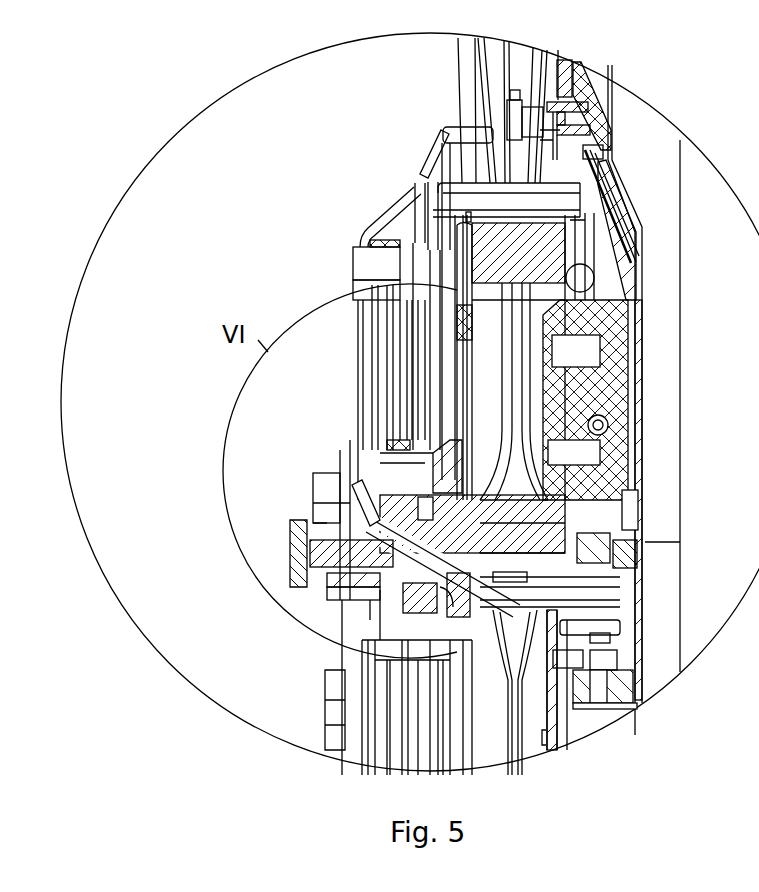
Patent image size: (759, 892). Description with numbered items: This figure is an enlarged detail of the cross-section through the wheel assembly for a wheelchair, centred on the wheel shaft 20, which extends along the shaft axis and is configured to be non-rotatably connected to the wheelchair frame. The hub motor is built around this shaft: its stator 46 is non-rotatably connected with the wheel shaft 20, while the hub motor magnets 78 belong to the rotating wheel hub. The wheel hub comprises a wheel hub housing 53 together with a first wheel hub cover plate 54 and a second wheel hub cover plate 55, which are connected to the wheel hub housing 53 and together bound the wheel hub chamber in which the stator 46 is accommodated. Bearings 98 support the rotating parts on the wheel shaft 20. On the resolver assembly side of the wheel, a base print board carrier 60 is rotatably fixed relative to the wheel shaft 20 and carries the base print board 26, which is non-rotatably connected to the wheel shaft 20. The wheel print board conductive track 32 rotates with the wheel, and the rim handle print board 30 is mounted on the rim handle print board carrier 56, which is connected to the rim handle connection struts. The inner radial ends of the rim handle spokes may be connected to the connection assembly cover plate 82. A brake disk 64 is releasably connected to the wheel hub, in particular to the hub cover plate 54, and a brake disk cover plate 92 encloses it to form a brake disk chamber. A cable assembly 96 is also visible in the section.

The wheel shaft 20 is at (372, 560).
The base print board 26 is at (388, 368).
The rim handle print board 30 is at (405, 383).
The wheel print board conductive track 32 is at (420, 400).
The stator 46 is at (517, 257).
The wheel hub housing 53 is at (547, 200).
The first wheel hub cover plate 54 is at (440, 244).
The second wheel hub cover plate 55 is at (565, 325).
The rim handle print board carrier 56 is at (462, 280).
The base print board carrier 60 is at (395, 345).
The brake disk 64 is at (385, 320).
The hub motor magnets 78 is at (470, 186).
The connection assembly cover plate 82 is at (600, 380).
The brake disk cover plate 92 is at (370, 298).
The cable assembly 96 is at (355, 512).
The bearings 98 is at (345, 540).